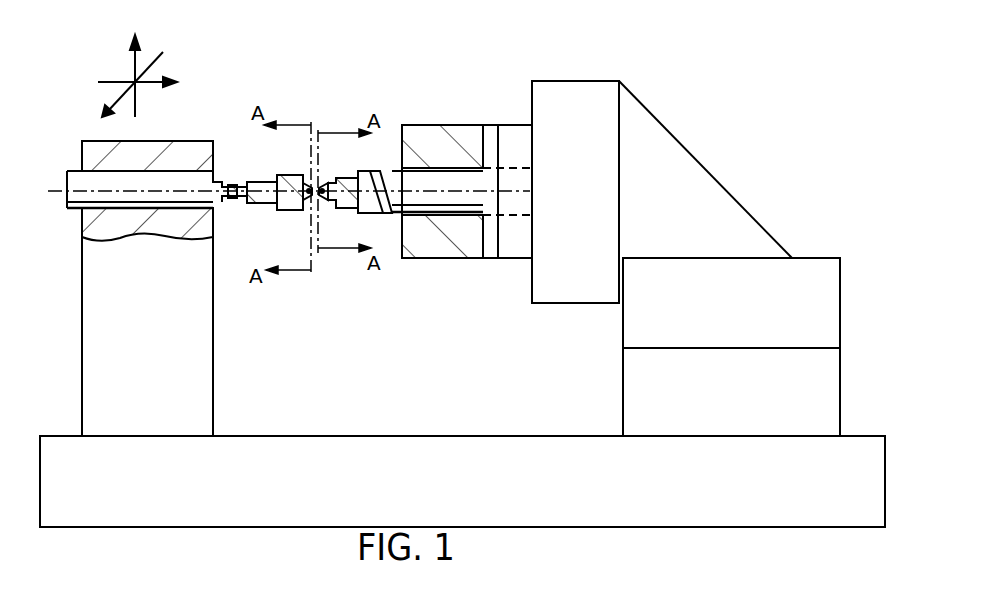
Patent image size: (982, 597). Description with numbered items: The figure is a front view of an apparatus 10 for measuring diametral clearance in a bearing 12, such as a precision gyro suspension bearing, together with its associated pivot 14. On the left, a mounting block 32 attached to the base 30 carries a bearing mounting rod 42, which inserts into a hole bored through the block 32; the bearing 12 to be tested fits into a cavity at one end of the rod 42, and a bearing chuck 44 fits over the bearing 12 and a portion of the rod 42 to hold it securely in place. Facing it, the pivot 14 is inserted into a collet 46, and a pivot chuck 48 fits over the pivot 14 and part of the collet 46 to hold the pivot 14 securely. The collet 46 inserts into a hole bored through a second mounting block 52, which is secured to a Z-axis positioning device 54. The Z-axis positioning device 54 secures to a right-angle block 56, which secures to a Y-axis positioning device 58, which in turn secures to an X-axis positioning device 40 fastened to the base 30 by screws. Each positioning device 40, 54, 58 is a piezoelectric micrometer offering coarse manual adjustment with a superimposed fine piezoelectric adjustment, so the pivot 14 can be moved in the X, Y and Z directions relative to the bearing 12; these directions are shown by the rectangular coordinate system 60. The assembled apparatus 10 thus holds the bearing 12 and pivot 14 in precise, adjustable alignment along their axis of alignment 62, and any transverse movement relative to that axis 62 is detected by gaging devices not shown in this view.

The apparatus 10 is at (318, 66).
The rectangular coordinate system 60 is at (126, 72).
The axis of alignment 62 is at (60, 186).
The mounting block 32 is at (213, 362).
The bearing mounting rod 42 is at (212, 200).
The bearing chuck 44 is at (283, 176).
The bearing 12 is at (308, 178).
The pivot 14 is at (325, 180).
The pivot chuck 48 is at (336, 209).
The collet 46 is at (388, 155).
The mounting block 52 is at (458, 125).
The Z-axis positioning device 54 is at (560, 81).
The right-angle block 56 is at (692, 152).
The Y-axis positioning device 58 is at (623, 334).
The X-axis positioning device 40 is at (623, 400).
The base 30 is at (370, 435).